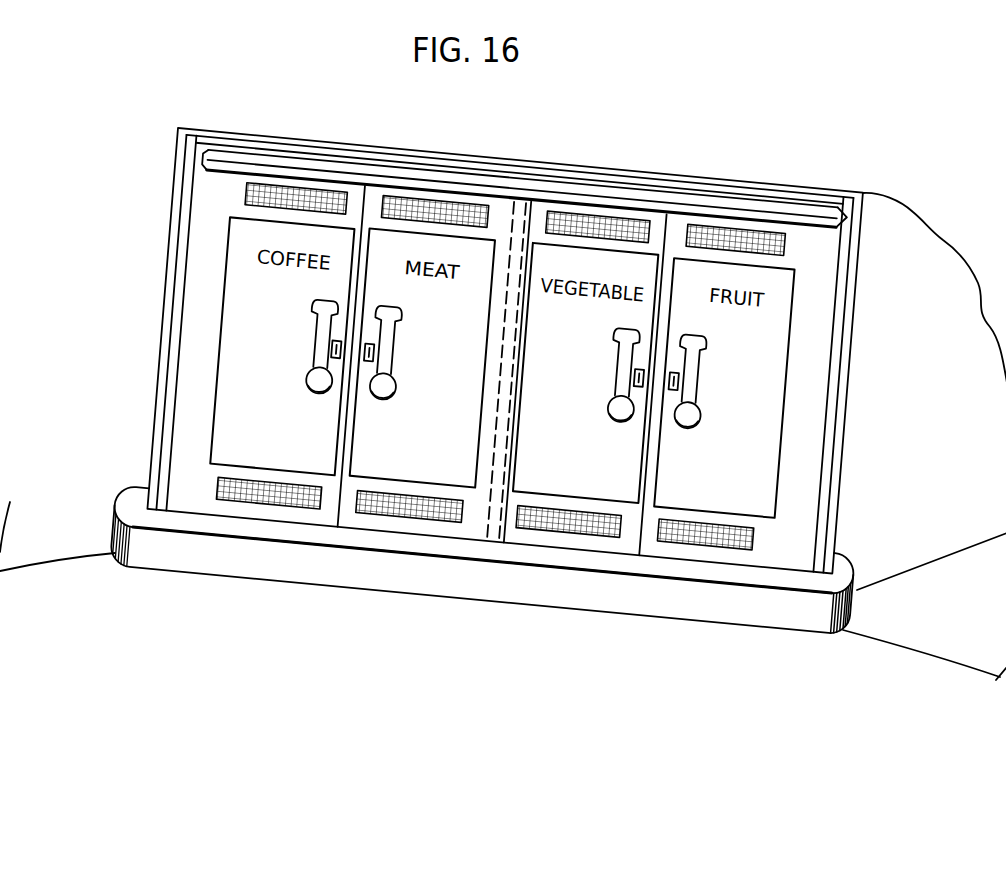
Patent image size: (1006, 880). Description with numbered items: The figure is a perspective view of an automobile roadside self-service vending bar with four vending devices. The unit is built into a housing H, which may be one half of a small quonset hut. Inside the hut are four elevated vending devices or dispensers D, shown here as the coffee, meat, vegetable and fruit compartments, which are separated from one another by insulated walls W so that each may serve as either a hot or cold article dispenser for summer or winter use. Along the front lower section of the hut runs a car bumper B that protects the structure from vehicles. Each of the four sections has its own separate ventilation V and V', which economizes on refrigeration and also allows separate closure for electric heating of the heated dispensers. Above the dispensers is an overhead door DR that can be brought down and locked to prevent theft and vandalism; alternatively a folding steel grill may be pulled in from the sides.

The overhead door DR is at (633, 193).
The ventilation V' is at (444, 219).
The ventilation V is at (416, 499).
The vending device D is at (226, 353).
The insulated wall W is at (508, 212).
The car bumper B is at (448, 585).
The housing H is at (912, 220).